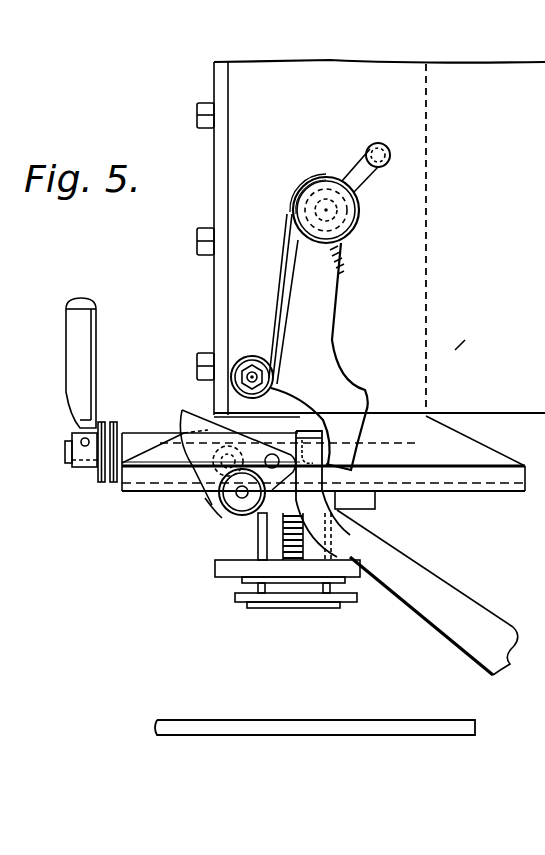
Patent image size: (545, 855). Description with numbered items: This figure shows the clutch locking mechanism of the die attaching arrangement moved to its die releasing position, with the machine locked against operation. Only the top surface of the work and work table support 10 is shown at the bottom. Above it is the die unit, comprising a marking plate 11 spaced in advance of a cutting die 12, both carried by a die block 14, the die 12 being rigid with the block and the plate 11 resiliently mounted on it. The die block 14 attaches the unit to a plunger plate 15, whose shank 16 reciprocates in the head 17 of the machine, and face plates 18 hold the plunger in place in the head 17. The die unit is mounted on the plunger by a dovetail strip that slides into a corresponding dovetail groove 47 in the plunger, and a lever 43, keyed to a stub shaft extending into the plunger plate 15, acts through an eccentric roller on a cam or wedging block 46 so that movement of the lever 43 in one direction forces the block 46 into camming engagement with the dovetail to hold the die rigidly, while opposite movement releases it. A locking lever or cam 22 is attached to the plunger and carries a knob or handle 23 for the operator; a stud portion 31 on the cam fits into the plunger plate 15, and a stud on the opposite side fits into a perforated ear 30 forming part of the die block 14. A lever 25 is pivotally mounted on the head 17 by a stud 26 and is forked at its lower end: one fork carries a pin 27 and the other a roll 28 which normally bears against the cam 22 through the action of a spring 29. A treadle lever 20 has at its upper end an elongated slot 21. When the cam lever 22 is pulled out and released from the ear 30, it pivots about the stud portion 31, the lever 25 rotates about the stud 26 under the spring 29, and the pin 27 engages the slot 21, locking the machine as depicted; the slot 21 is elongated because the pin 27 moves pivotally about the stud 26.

The work and work table support 10 is at (219, 729).
The marking plate 11 is at (247, 603).
The cutting die 12 is at (262, 588).
The die block 14 is at (362, 498).
The plunger plate 15 is at (498, 472).
The shank 16 is at (398, 293).
The head 17 is at (470, 333).
The face plates 18 is at (214, 317).
The treadle lever 20 is at (425, 622).
The elongated slot 21 is at (308, 438).
The locking lever or cam 22 is at (203, 452).
The knob or handle 23 is at (240, 514).
The lever 25 is at (318, 318).
The stud 26 is at (330, 218).
The pin 27 is at (346, 453).
The roll 28 is at (249, 358).
The spring 29 is at (288, 262).
The perforated ear 30 is at (212, 511).
The stud portion 31 is at (273, 455).
The lever 43 is at (72, 380).
The cam or wedging block 46 is at (72, 456).
The dovetail groove 47 is at (122, 486).